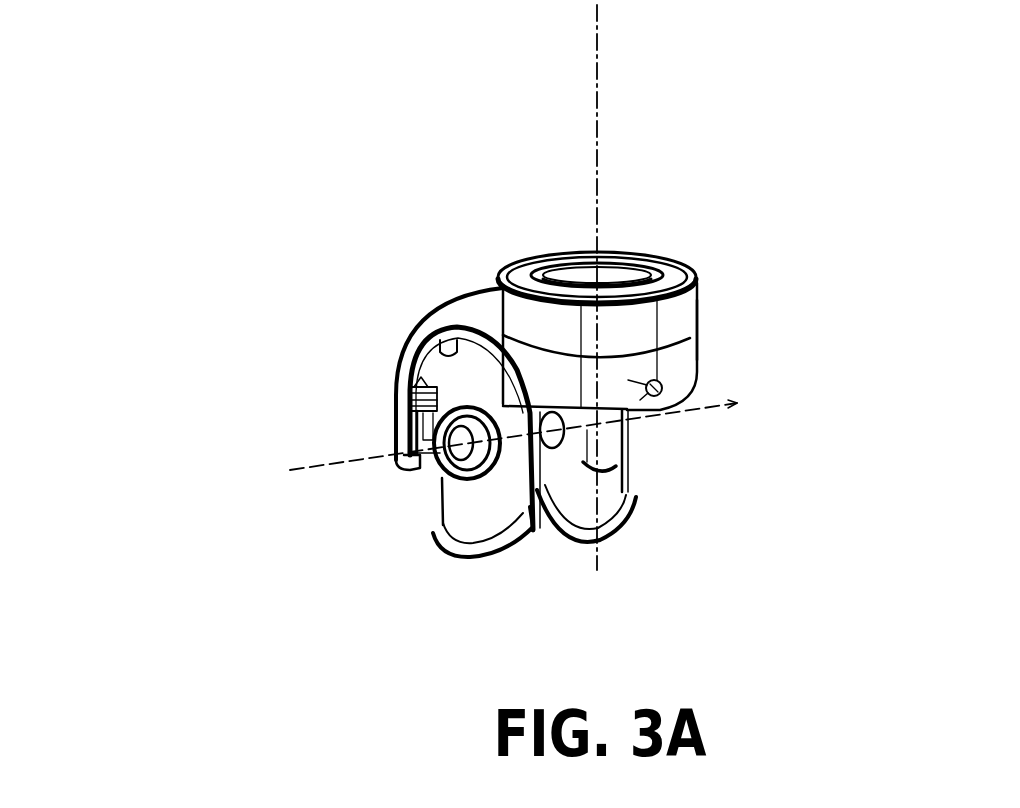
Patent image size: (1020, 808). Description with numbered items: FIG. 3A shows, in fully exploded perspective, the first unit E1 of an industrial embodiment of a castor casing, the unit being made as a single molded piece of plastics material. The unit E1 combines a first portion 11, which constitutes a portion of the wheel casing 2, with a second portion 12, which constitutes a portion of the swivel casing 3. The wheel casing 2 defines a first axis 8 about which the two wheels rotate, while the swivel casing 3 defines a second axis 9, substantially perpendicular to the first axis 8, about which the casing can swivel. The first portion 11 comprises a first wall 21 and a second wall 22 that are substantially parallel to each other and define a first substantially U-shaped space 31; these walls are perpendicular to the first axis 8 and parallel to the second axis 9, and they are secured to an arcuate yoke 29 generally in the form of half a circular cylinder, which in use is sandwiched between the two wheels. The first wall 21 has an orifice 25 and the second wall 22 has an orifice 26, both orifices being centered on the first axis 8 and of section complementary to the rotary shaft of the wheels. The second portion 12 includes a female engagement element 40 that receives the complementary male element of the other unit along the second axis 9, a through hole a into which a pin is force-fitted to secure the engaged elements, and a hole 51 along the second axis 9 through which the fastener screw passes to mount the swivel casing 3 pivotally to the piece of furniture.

The second axis 9 is at (597, 56).
The first unit E1 is at (222, 139).
The hole 51 is at (621, 232).
The second portion 12 is at (663, 318).
The female engagement element 40 is at (687, 323).
The through hole a is at (663, 387).
The first portion 11 is at (440, 307).
The arcuate yoke 29 is at (473, 293).
The orifice 25 is at (397, 378).
The first wall 21 is at (470, 493).
The wheel casing 2 is at (404, 543).
The orifice 26 is at (553, 447).
The second wall 22 is at (620, 468).
The first U-shaped space 31 is at (546, 547).
The first axis 8 is at (335, 462).
The swivel casing 3 is at (718, 438).